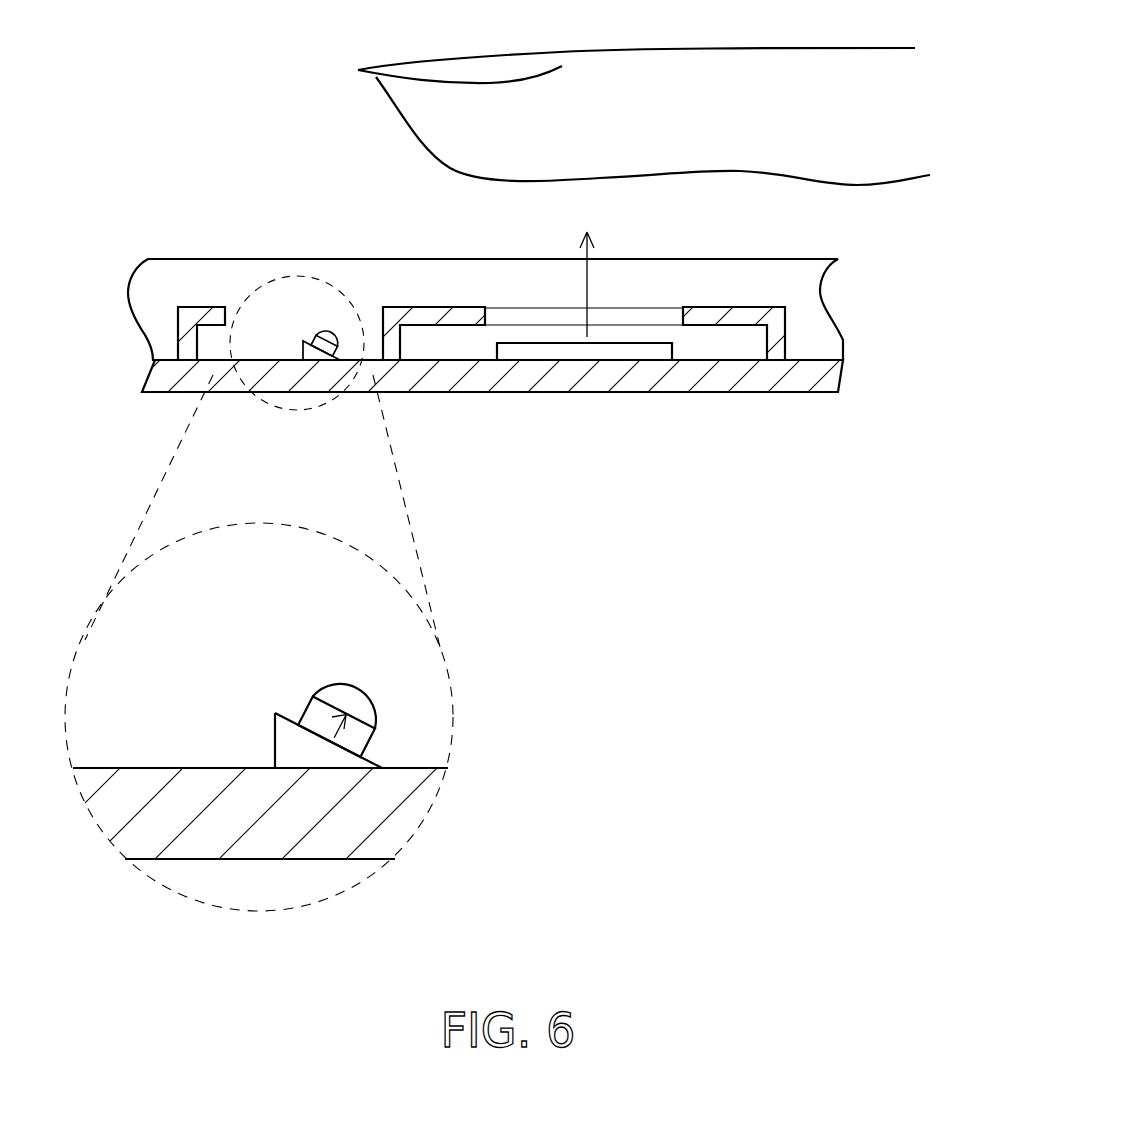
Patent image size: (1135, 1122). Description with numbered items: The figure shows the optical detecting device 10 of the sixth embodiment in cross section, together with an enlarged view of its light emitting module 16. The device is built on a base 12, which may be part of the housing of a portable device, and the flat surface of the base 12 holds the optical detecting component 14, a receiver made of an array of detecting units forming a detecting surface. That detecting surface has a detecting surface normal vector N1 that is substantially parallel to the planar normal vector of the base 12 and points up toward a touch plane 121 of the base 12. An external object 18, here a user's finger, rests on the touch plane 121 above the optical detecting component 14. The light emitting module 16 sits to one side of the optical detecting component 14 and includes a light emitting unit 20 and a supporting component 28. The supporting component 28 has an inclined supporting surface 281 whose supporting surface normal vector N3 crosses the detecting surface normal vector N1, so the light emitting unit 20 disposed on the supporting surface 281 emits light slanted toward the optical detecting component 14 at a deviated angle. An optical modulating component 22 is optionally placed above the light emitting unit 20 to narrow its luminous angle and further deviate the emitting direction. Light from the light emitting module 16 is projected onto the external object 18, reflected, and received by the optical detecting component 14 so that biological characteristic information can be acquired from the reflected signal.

The optical detecting device 10 is at (160, 218).
The base 12 is at (733, 372).
The touch plane 121 is at (550, 288).
The optical detecting component 14 is at (643, 350).
The light emitting module 16 is at (350, 289).
The external object 18 is at (818, 62).
The light emitting unit 20 is at (368, 738).
The optical modulating component 22 is at (357, 703).
The supporting component 28 is at (288, 743).
The supporting surface 281 is at (281, 698).
The detecting surface normal vector N1 is at (587, 266).
The supporting surface normal vector N3 is at (323, 717).